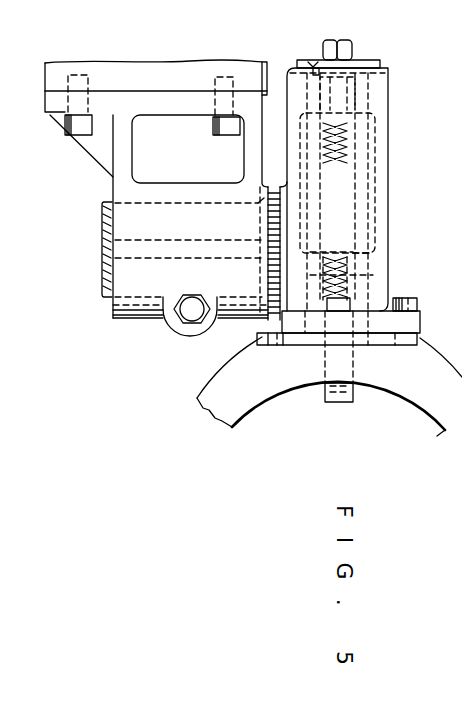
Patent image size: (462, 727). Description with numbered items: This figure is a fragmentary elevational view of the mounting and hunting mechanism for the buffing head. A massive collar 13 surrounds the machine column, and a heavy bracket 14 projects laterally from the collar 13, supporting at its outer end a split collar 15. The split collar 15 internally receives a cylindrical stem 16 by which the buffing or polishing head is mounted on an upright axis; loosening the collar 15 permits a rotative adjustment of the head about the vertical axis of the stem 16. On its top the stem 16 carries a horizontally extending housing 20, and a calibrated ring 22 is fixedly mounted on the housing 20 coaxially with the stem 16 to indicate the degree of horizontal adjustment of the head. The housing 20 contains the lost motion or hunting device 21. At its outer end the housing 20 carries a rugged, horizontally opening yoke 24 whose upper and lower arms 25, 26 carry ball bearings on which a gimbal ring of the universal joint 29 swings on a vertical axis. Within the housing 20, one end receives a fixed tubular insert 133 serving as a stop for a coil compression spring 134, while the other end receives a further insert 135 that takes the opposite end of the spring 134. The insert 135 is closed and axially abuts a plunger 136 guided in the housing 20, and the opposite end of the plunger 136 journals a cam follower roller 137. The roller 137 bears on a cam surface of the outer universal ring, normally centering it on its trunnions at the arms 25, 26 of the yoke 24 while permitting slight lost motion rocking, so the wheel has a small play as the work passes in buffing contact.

The massive collar 13 is at (55, 78).
The heavy bracket 14 is at (113, 190).
The split collar 15 is at (125, 312).
The cylindrical stem 16 is at (105, 268).
The housing 20 is at (382, 205).
The hunting device 21 is at (362, 394).
The calibrated ring 22 is at (273, 233).
The yoke 24 is at (252, 416).
The upper arm 25 is at (437, 436).
The lower arm 26 is at (200, 395).
The universal joint 29 is at (207, 370).
The fixed tubular insert 133 is at (352, 147).
The coil compression spring 134 is at (353, 275).
The further insert 135 is at (370, 247).
The plunger 136 is at (342, 308).
The cam follower roller 137 is at (341, 402).